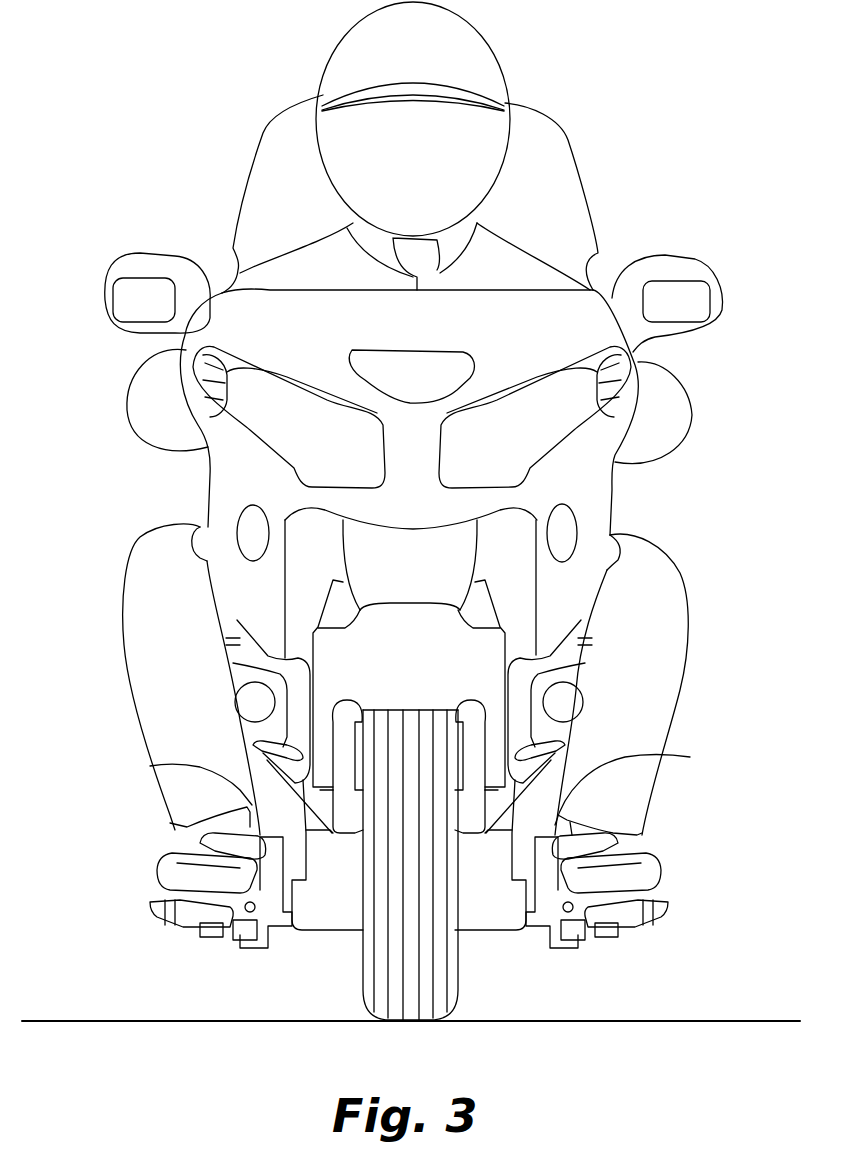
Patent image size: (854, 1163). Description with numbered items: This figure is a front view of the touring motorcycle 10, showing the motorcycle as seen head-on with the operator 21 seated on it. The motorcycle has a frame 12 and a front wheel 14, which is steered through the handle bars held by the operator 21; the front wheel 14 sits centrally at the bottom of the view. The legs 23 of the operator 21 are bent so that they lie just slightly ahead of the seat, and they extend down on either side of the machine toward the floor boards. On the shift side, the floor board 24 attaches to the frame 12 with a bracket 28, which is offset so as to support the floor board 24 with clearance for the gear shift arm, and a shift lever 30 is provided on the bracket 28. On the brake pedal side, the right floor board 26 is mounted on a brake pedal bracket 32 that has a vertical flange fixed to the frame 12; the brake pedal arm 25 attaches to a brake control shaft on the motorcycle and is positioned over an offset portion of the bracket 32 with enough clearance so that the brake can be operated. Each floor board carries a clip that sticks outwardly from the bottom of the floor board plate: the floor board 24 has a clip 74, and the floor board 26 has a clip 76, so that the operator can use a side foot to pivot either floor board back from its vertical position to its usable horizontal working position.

The touring motorcycle 10 is at (648, 224).
The frame 12 is at (320, 598).
The front wheel 14 is at (396, 1000).
The operator 21 is at (330, 262).
The legs 23 is at (660, 607).
The floor board 24 is at (665, 888).
The brake pedal arm 25 is at (150, 766).
The right floor board 26 is at (157, 882).
The bracket 28 is at (540, 937).
The shift lever 30 is at (665, 756).
The brake pedal bracket 32 is at (273, 927).
The clip 74 is at (607, 938).
The clip 76 is at (212, 940).